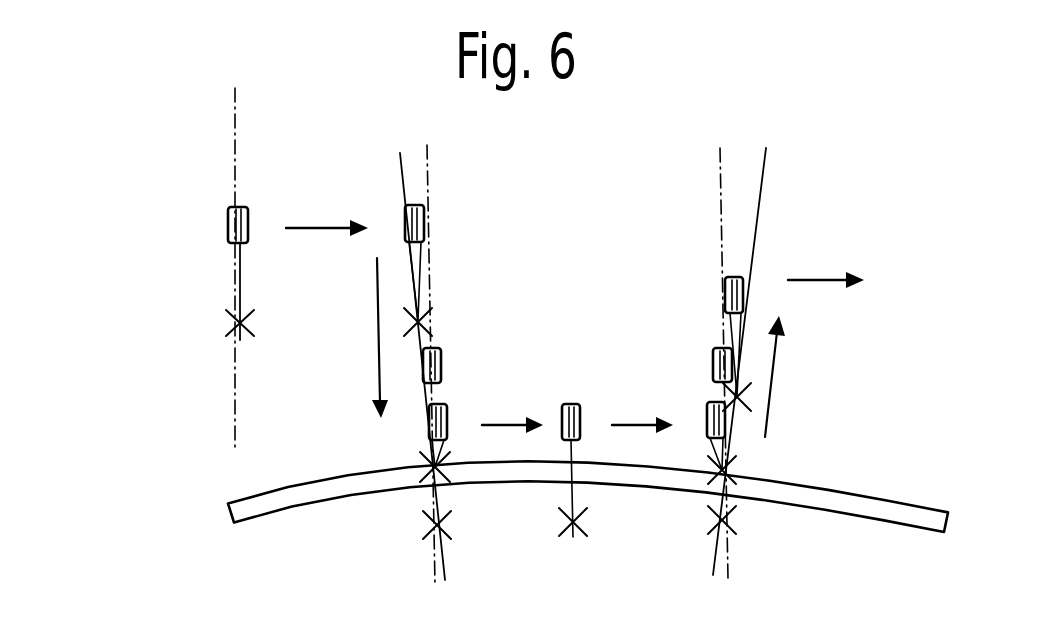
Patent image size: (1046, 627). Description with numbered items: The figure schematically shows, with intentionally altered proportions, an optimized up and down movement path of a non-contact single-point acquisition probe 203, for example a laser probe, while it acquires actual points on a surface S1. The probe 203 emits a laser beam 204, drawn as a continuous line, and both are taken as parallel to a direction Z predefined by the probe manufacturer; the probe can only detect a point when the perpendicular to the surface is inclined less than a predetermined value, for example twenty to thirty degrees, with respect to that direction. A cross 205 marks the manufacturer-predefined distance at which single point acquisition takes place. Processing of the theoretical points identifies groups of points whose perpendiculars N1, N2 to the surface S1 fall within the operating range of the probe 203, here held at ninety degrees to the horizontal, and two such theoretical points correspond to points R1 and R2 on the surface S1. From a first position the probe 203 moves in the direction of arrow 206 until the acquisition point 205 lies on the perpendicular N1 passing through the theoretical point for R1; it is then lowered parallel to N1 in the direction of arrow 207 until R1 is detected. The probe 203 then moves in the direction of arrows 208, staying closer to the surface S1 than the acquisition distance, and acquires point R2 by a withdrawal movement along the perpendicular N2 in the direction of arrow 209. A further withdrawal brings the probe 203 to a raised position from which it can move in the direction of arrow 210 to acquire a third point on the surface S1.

The non-contact type probe 203 is at (228, 215).
The laser beam 204 is at (240, 268).
The cross 205 is at (250, 328).
The arrow 206 is at (318, 223).
The arrow 207 is at (378, 345).
The arrows 208 is at (505, 421).
The arrow 209 is at (775, 380).
The arrow 210 is at (812, 279).
The surface S1 is at (246, 496).
The direction Z— Z is at (235, 93).
The perpendicular N1 is at (400, 183).
The perpendicular N2 is at (762, 210).
The point R1 is at (430, 465).
The point R2 is at (732, 468).